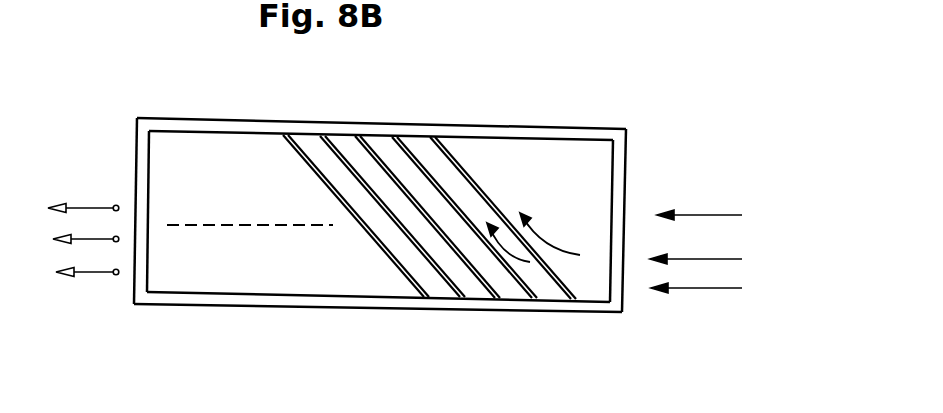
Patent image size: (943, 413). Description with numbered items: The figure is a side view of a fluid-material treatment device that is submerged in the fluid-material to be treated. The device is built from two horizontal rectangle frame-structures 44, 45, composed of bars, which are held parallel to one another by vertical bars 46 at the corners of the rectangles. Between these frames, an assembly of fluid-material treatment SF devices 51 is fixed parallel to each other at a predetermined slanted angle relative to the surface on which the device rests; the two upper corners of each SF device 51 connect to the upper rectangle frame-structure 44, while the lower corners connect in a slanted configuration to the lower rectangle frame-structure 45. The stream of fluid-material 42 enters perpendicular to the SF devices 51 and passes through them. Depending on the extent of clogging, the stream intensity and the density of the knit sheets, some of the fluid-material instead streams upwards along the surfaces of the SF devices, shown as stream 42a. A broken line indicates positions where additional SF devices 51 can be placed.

The stream of fluid-material 42 is at (97, 274).
The stream flowing upwards on SF surfaces 42a is at (578, 256).
The upper horizontal rectangle frame-structure 44 is at (580, 137).
The lower horizontal rectangle frame-structure 45 is at (373, 303).
The vertical bars 46 is at (145, 167).
The fluid-material treatment SF devices 51 is at (477, 177).